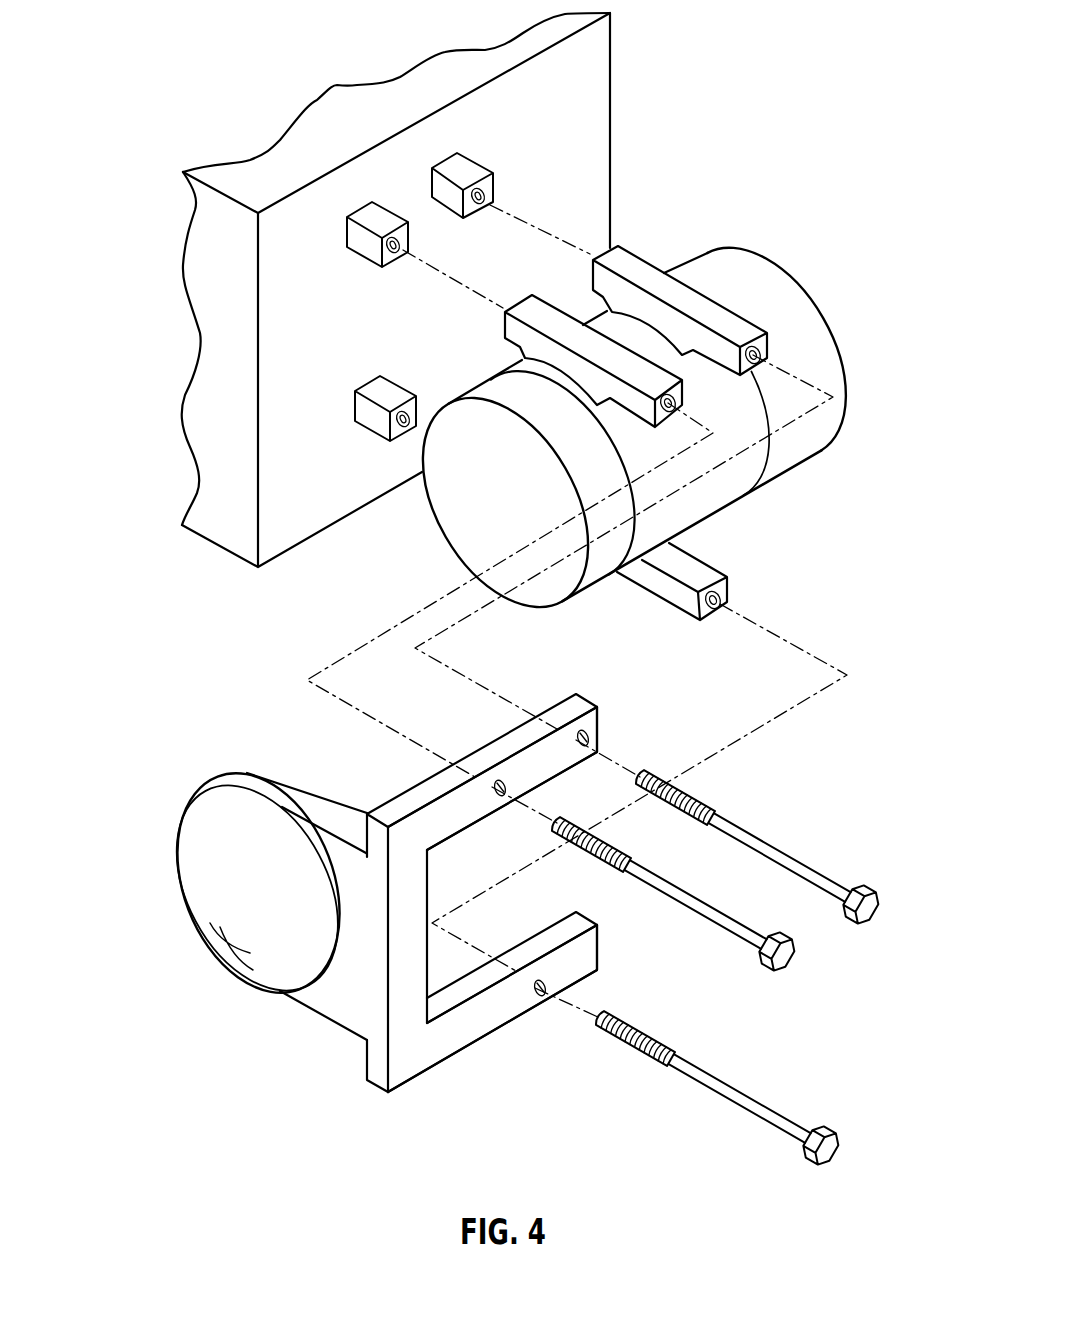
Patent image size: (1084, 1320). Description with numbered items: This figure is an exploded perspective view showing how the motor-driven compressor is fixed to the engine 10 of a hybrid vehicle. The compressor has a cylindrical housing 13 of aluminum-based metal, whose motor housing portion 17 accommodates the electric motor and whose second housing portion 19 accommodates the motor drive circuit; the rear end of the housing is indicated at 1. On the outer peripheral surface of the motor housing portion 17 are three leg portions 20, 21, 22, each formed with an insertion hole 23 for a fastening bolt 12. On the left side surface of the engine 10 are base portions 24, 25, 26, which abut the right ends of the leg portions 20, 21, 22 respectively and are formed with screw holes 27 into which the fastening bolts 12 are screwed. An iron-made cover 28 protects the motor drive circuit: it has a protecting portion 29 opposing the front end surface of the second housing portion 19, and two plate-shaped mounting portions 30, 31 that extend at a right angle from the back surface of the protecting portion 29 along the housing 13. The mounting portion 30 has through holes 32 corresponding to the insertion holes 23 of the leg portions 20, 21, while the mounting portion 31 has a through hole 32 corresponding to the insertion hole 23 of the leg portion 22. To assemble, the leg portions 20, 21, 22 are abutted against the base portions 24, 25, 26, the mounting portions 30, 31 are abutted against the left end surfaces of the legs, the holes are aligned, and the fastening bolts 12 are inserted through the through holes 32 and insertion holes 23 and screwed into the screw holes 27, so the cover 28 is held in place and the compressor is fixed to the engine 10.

The rear end portion of motor 1 is at (810, 350).
The engine 10 is at (218, 550).
The fastening bolts 12 is at (790, 850).
The housing 13 is at (627, 399).
The motor housing portion 17 is at (720, 490).
The second housing portion 19 is at (467, 522).
The leg portion 20 is at (655, 265).
The leg portion 21 is at (556, 305).
The leg portion 22 is at (712, 557).
The insertion holes 23 is at (762, 352).
The base portion 24 is at (476, 158).
The base portion 25 is at (392, 208).
The base portion 26 is at (356, 434).
The screw holes 27 is at (483, 203).
The cover 28 is at (409, 917).
The protecting portion 29 is at (233, 872).
The mounting portion 30 is at (500, 742).
The mounting portion 31 is at (500, 1020).
The through holes 32 is at (588, 736).